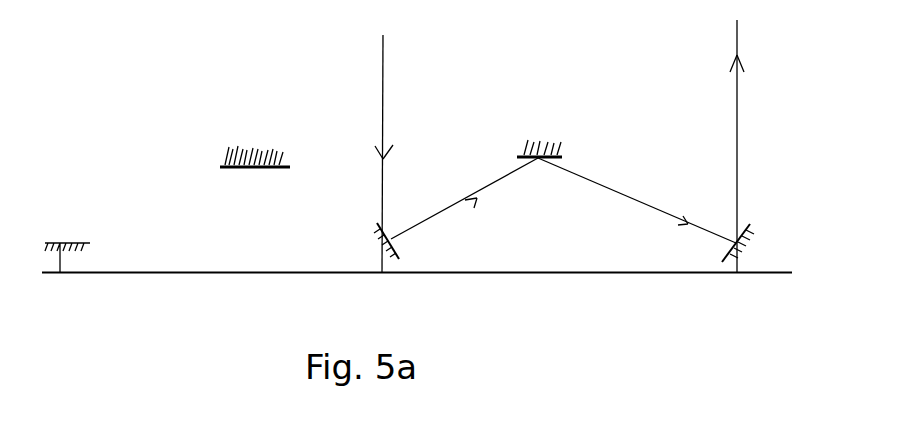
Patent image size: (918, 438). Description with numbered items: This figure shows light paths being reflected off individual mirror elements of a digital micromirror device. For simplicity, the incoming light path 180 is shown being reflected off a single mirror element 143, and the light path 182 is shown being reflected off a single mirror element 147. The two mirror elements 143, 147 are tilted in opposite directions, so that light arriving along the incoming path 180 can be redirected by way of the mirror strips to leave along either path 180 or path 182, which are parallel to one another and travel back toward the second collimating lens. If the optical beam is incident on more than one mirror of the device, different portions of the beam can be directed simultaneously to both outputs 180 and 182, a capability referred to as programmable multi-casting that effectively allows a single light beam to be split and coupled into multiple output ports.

The mirror element 143 is at (408, 253).
The mirror element 147 is at (768, 221).
The light path 180 is at (388, 92).
The light path 182 is at (745, 118).